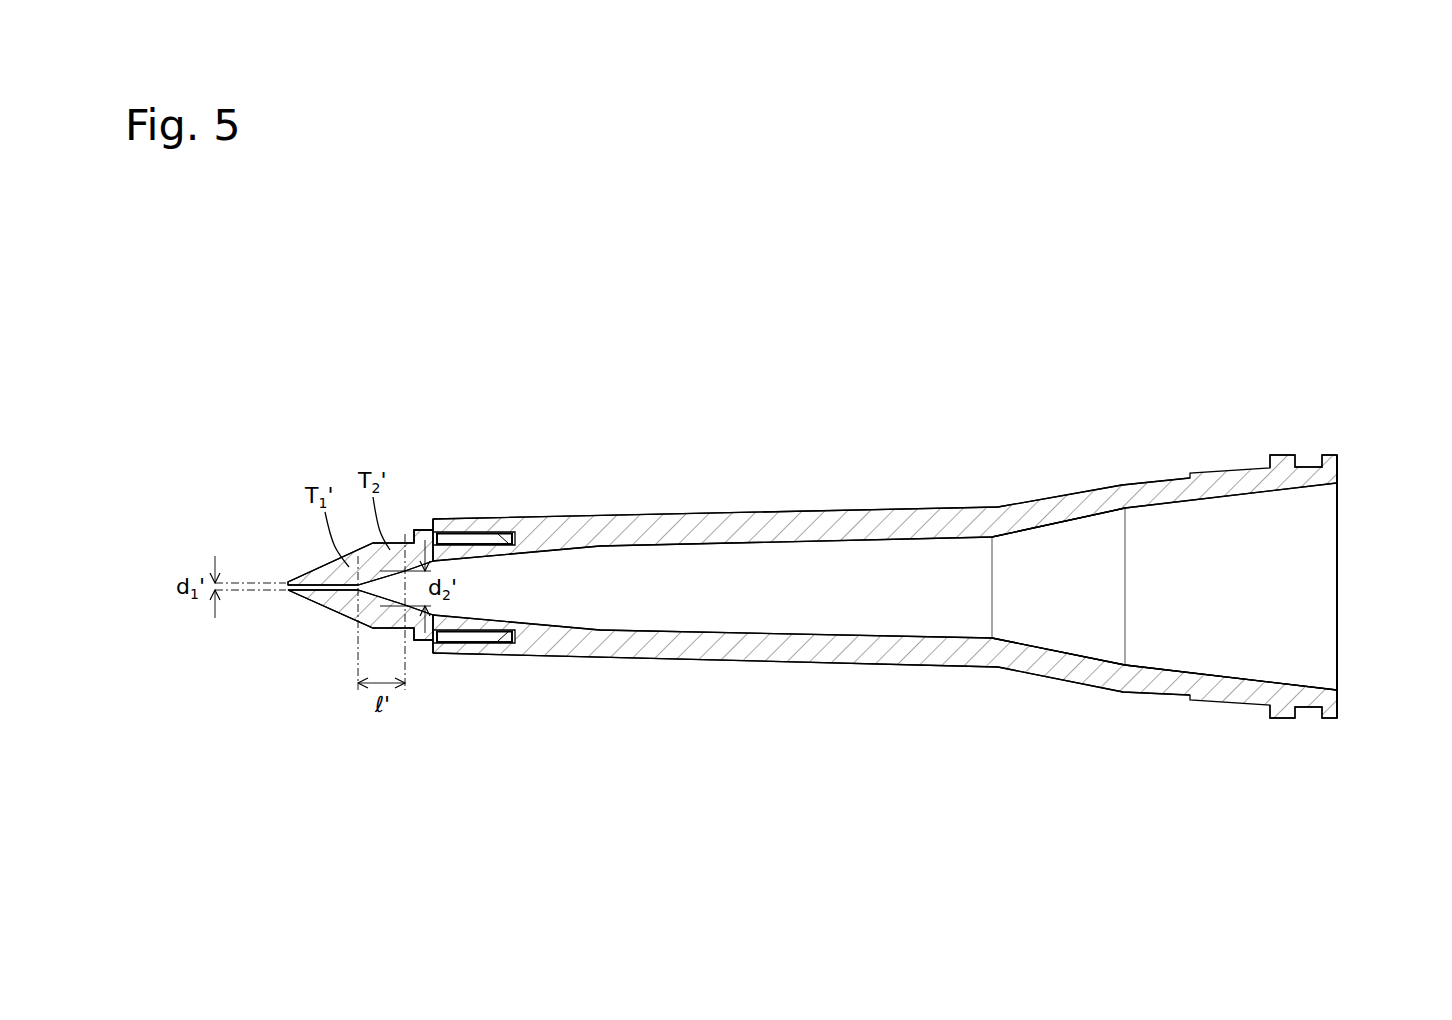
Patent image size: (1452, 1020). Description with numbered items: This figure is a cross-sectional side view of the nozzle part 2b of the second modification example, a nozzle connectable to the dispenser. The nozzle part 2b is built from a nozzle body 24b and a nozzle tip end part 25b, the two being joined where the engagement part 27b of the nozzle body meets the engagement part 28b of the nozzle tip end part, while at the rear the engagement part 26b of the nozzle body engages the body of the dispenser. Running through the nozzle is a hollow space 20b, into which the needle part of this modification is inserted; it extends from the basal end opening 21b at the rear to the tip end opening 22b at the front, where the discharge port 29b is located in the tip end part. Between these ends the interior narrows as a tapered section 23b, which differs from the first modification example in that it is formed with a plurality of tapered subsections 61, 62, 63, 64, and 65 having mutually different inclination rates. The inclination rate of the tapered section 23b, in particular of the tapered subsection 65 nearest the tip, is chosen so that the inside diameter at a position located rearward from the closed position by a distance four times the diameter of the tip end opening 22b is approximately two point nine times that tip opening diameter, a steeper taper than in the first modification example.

The nozzle part 2b is at (768, 409).
The hollow space 20b is at (1147, 650).
The basal end opening 21b is at (1340, 566).
The tip end opening 22b is at (284, 588).
The tapered section 23b is at (1022, 537).
The nozzle body 24b is at (905, 522).
The nozzle tip end part 25b is at (409, 540).
The engagement part of the nozzle body with the dispenser body 26b is at (1306, 449).
The engagement part of the nozzle body 27b is at (484, 522).
The engagement part of the nozzle tip end part 28b is at (480, 646).
The discharge port 29b is at (320, 591).
The tapered subsection 61 is at (1230, 676).
The tapered subsection 62 is at (1057, 655).
The tapered subsection 63 is at (780, 632).
The tapered subsection 64 is at (476, 558).
The tapered subsection 65 is at (412, 607).